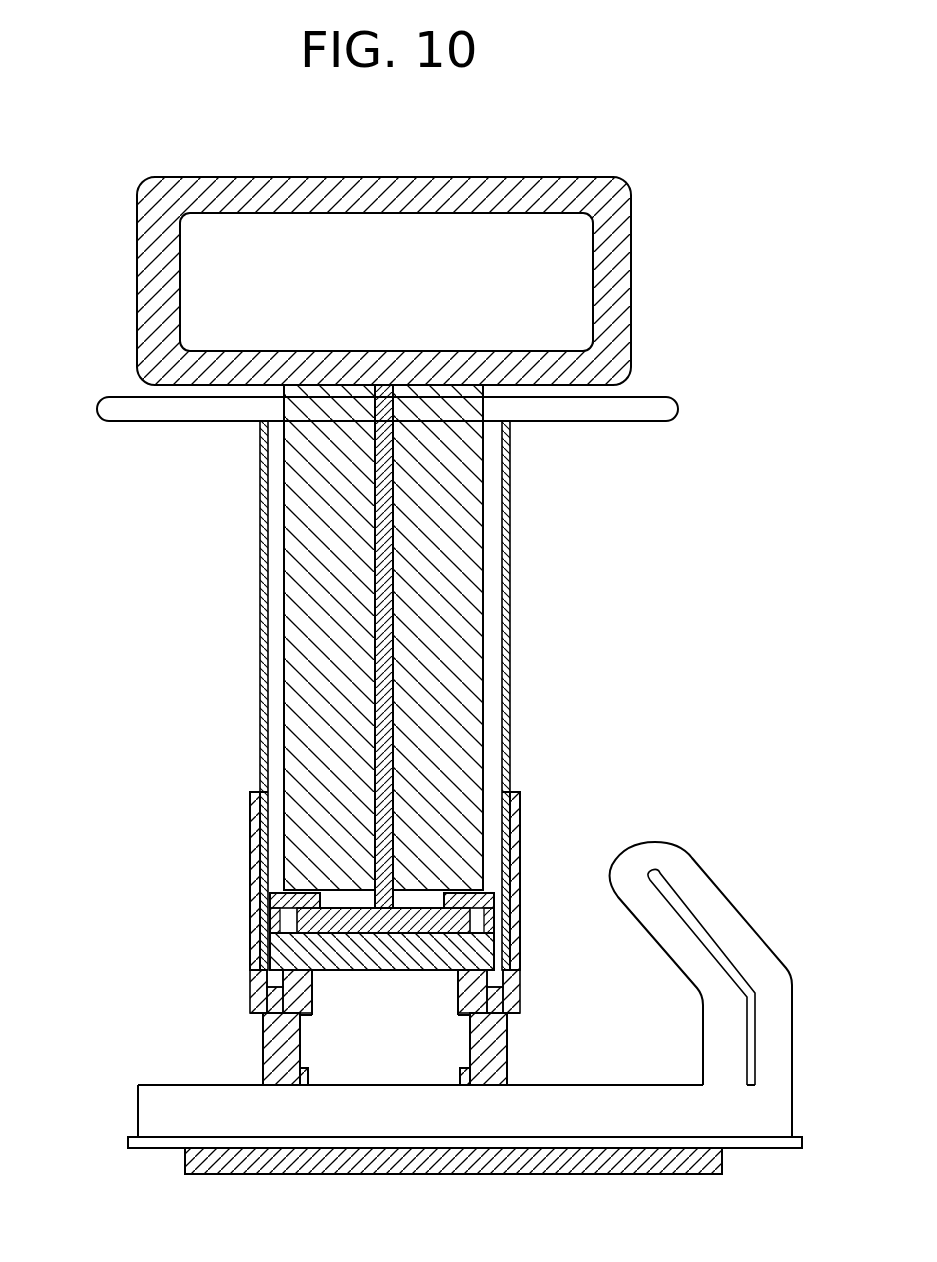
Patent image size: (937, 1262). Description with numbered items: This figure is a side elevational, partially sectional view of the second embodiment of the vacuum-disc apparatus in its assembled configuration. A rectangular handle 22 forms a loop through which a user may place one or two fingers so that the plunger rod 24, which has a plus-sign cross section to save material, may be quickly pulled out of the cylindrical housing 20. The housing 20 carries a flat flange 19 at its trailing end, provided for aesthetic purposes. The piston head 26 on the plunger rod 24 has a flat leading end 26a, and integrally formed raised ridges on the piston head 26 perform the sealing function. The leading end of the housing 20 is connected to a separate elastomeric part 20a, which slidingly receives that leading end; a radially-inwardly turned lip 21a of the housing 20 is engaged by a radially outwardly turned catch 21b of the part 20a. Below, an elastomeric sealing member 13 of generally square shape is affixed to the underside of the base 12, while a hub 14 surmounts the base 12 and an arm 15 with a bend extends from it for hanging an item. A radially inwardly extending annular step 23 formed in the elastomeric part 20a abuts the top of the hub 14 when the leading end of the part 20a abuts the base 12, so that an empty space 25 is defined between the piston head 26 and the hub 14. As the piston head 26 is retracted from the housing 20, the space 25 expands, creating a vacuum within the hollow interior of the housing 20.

The base 12 is at (155, 1085).
The elastomeric sealing member 13 is at (245, 1174).
The hub 14 is at (389, 1062).
The arm 15 is at (757, 930).
The flat flange 19 is at (175, 421).
The cylindrical housing 20 is at (512, 578).
The separate part 20a is at (250, 815).
The radially-inwardly turned lip 21a is at (267, 1027).
The radially outwardly turned catch 21b is at (488, 958).
The handle 22 is at (470, 178).
The radially inwardly extending annular step 23 is at (460, 1018).
The plunger rod 24 is at (284, 600).
The empty space 25 is at (406, 1009).
The piston head 26 is at (277, 927).
The flat leading end 26a is at (340, 907).